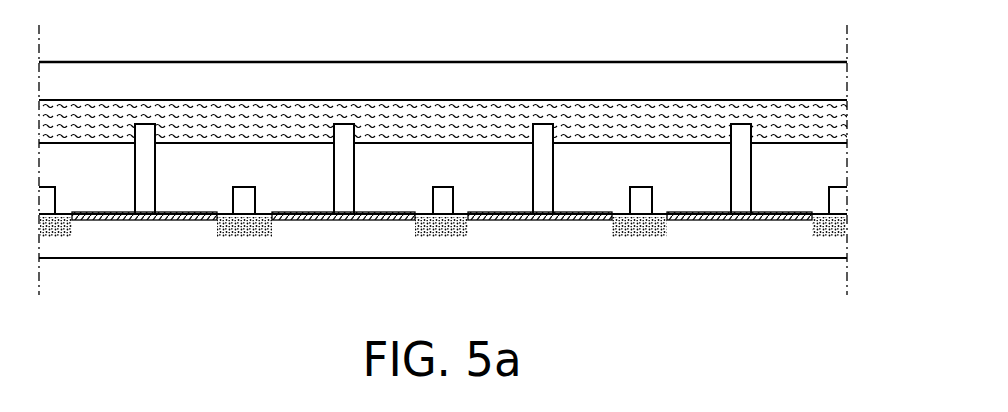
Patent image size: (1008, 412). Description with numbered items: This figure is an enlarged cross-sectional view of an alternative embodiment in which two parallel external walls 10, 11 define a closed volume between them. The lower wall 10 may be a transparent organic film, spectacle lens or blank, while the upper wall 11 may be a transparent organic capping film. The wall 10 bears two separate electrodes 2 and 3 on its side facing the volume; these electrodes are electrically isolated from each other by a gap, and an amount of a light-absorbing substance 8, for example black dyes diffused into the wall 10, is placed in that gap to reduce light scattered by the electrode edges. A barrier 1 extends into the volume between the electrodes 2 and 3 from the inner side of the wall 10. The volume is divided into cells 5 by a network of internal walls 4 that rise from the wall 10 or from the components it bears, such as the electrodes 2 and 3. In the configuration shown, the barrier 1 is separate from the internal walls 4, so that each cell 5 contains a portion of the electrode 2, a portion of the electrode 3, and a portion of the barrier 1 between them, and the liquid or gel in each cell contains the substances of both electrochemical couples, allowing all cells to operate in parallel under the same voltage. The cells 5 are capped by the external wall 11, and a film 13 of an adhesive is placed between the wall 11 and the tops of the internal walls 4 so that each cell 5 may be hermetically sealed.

The barrier 1 is at (247, 200).
The electrode 2 is at (192, 220).
The electrode 3 is at (385, 220).
The internal wall 4 is at (146, 140).
The cell 5 is at (73, 190).
The absorbing substance 8 is at (230, 236).
The external wall 10 is at (830, 247).
The external wall 11 is at (810, 80).
The adhesive film 13 is at (838, 118).